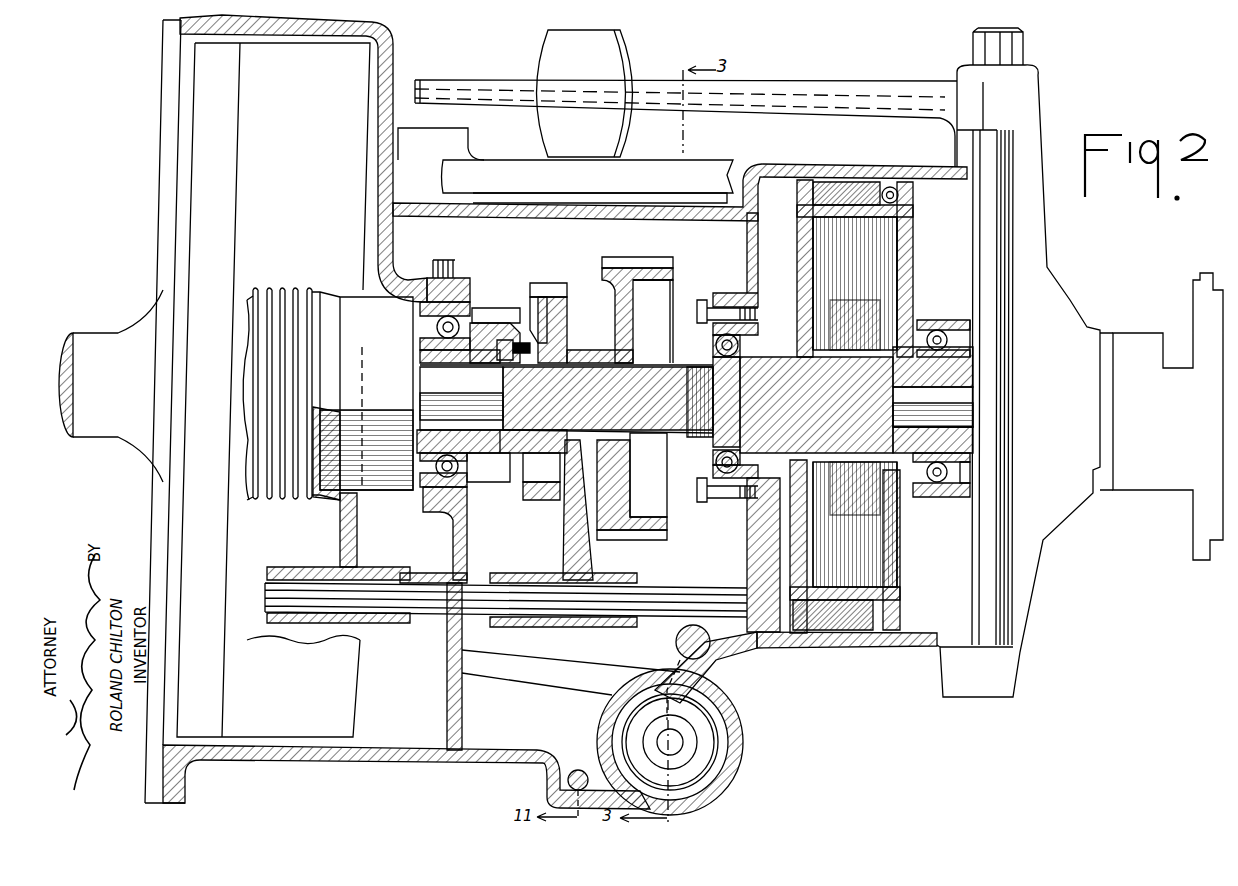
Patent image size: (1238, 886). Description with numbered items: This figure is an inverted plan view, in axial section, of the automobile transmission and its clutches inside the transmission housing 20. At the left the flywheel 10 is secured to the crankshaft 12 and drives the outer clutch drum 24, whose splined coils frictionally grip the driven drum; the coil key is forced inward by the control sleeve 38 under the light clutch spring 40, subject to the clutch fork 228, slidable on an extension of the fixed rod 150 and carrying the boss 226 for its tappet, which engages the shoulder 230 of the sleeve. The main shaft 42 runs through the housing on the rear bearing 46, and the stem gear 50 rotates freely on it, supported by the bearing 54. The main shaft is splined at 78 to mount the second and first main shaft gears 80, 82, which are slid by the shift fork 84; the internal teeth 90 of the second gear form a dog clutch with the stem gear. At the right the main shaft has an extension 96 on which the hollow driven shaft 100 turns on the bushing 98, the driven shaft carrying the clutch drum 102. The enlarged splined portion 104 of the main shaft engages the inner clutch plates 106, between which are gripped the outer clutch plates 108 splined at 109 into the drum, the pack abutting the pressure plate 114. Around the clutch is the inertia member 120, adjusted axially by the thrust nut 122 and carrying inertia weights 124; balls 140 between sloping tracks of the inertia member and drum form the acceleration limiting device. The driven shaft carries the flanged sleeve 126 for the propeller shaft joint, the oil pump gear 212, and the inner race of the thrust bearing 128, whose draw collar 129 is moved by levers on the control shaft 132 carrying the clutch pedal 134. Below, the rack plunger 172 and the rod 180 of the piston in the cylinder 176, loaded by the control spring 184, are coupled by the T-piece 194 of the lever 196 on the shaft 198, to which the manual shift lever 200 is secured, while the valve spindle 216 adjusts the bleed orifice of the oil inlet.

The flywheel 10 is at (273, 390).
The crankshaft 12 is at (95, 333).
The transmission housing 20 is at (397, 50).
The outer clutch drum 24 is at (413, 500).
The control sleeve 38 is at (381, 490).
The clutch spring 40 is at (251, 331).
The main shaft 42 is at (427, 380).
The rear bearing 46 is at (705, 297).
The stem gear 50 is at (486, 312).
The bearing 54 is at (462, 489).
The splines 78 is at (649, 398).
The second main shaft gear 80 is at (552, 293).
The first main shaft gear 82 is at (626, 262).
The shift fork 84 is at (566, 540).
The internal teeth 90 is at (533, 292).
The extension 96 is at (975, 400).
The bushing 98 is at (975, 441).
The hollow driven shaft 100 is at (973, 373).
The clutch drum 102 is at (908, 182).
The enlarged splined portion 104 is at (765, 480).
The inner clutch plates 106 is at (905, 290).
The outer clutch plates 108 is at (897, 243).
The splines 109 is at (912, 212).
The pressure plate 114 is at (797, 248).
The inertia member 120 is at (790, 562).
The thrust nut 122 is at (760, 305).
The inertia weights 124 is at (808, 182).
The flanged sleeve 126 is at (1168, 416).
The thrust bearing 128 is at (975, 497).
The draw collar 129 is at (931, 320).
The control shaft 132 is at (1013, 410).
The clutch pedal 134 is at (637, 58).
The balls 140 is at (886, 188).
The fixed rod 150 is at (265, 596).
The plunger 172 is at (676, 640).
The cylinder 176 is at (740, 762).
The rod 180 is at (697, 736).
The control spring 184 is at (718, 742).
The T-piece 194 is at (663, 665).
The lever 196 is at (510, 673).
The shaft 198 is at (434, 268).
The manual shift lever 200 is at (497, 166).
The oil pump gear 212 is at (975, 477).
The valve spindle 216 is at (576, 770).
The boss 226 is at (383, 624).
The clutch fork 228 is at (340, 550).
The shoulder 230 is at (320, 496).